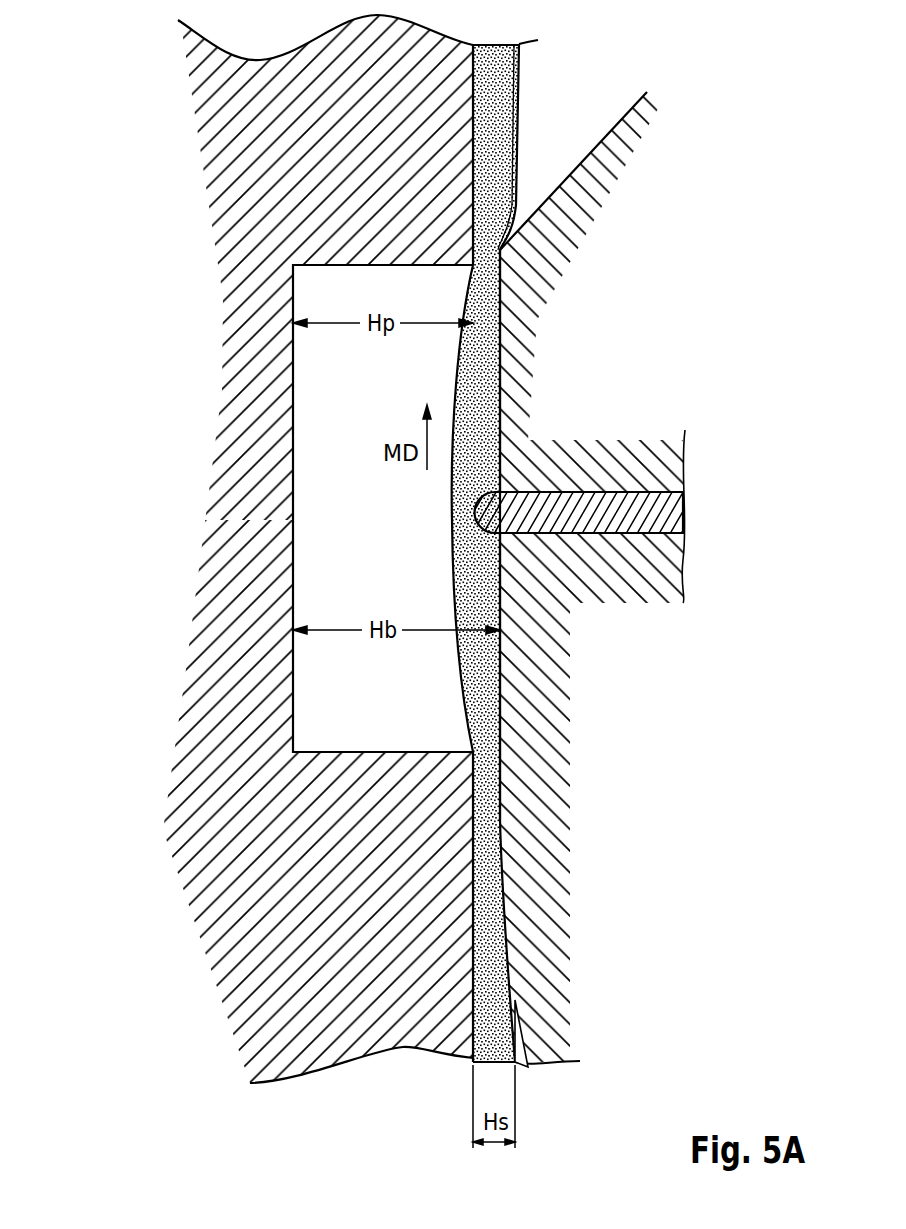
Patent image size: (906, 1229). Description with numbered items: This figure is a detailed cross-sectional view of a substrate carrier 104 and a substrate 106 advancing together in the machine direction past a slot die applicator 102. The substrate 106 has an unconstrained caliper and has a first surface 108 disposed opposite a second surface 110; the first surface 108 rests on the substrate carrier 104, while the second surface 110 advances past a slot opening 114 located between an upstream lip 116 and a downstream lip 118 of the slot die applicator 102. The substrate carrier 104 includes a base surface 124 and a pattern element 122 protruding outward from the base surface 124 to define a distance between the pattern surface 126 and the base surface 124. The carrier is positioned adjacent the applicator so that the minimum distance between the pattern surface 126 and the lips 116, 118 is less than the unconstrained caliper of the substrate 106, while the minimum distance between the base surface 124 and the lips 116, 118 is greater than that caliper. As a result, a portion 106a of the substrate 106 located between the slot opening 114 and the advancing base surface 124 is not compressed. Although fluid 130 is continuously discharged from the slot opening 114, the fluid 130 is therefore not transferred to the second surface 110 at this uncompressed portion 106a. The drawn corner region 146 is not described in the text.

The slot die applicator 102 is at (656, 271).
The substrate carrier 104 is at (172, 409).
The substrate 106 is at (490, 117).
The portion of the substrate 106a is at (463, 540).
The first surface 108 is at (452, 567).
The second surface 110 is at (518, 1047).
The slot opening 114 is at (483, 507).
The upstream lip 116 is at (482, 659).
The downstream lip 118 is at (480, 362).
The pattern element 122 is at (293, 893).
The base surface 124 is at (293, 572).
The pattern surface 126 is at (480, 940).
The fluid 130 is at (519, 88).
The cavity corner 146 is at (470, 745).